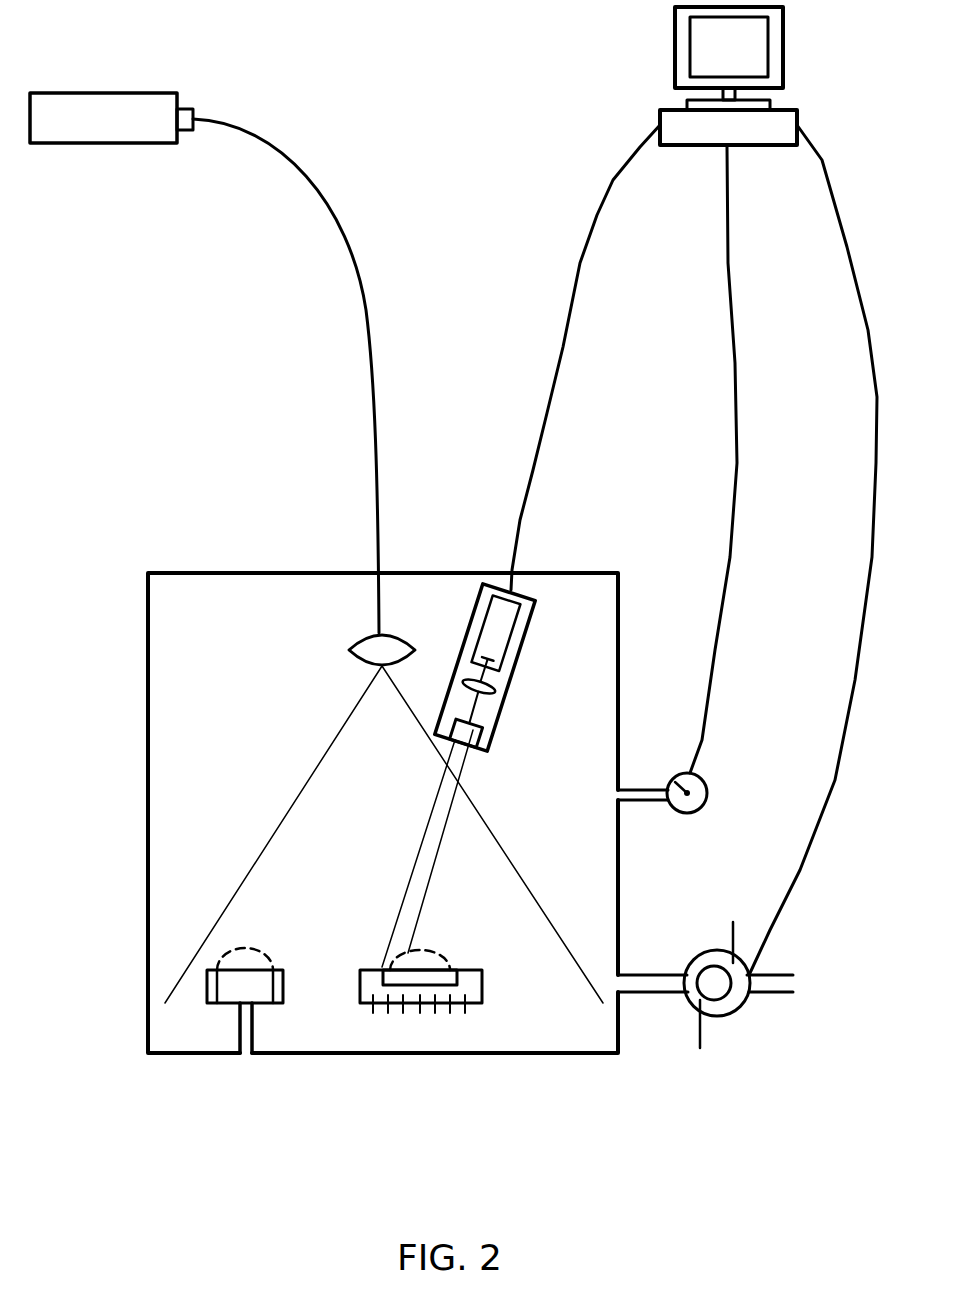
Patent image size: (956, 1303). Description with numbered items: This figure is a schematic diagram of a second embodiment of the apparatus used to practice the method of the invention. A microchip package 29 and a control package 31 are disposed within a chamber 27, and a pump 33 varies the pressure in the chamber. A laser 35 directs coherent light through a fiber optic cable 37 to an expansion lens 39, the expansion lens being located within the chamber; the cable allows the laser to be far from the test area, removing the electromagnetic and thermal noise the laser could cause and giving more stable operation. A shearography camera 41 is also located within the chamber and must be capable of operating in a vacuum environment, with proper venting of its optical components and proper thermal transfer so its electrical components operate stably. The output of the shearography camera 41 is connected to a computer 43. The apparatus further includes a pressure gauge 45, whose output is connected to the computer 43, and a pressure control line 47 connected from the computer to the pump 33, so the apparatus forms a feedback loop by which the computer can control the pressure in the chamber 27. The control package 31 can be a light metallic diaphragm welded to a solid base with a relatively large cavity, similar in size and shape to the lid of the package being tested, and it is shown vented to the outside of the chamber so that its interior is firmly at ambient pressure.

The chamber 27 is at (160, 614).
The microchip package 29 is at (468, 987).
The control package 31 is at (248, 988).
The pump 33 is at (718, 1007).
The laser 35 is at (110, 105).
The fiber optic cable 37 is at (310, 168).
The expansion lens 39 is at (368, 647).
The shearography camera 41 is at (510, 657).
The computer 43 is at (778, 43).
The pressure gauge 45 is at (708, 800).
The pressure control line 47 is at (835, 781).